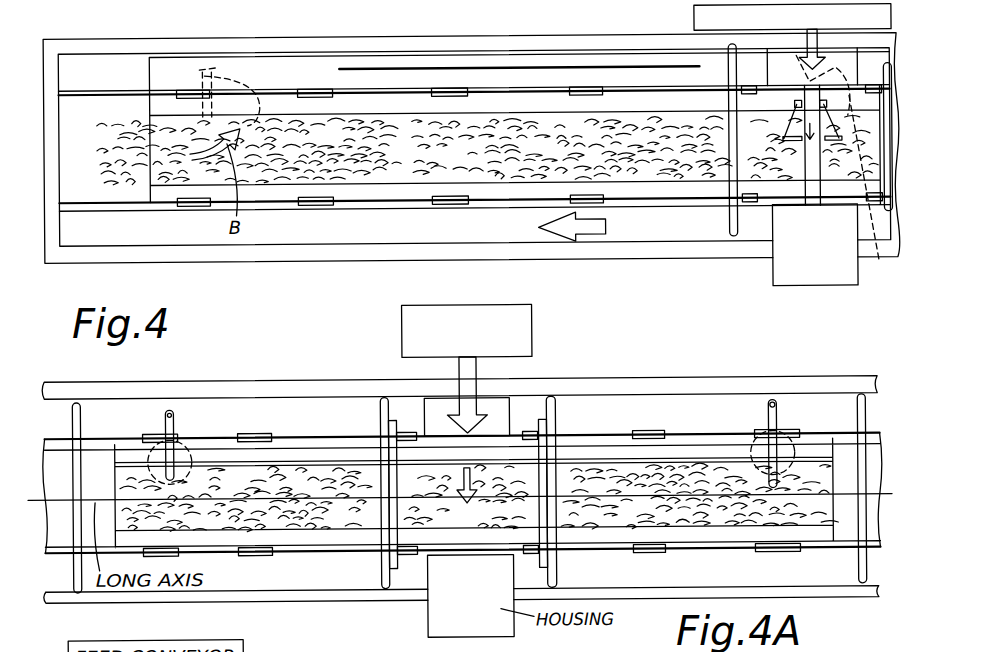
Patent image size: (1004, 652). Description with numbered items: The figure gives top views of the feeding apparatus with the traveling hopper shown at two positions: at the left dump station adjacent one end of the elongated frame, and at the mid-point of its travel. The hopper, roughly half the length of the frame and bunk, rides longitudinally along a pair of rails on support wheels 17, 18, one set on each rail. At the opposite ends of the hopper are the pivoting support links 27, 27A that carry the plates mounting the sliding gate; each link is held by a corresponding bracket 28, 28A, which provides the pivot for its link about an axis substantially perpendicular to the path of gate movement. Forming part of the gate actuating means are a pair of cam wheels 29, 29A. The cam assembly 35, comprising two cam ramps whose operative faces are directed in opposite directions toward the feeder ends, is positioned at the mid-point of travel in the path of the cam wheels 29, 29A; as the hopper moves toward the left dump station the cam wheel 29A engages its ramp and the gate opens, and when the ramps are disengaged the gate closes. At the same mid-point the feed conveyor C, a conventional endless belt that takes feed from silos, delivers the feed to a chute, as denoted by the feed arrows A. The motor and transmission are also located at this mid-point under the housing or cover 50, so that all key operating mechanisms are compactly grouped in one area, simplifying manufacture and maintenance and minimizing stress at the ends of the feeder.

In FIG. 4, the support wheels 17 is at (586, 88).
In FIG. 4A, the support wheels 17 is at (645, 432).
In FIG. 4, the support wheels 18 is at (440, 206).
In FIG. 4A, the support wheels 18 is at (765, 551).
In FIG. 4, the pivoting support link 27 is at (222, 79).
In FIG. 4, the bracket 28 is at (204, 78).
In FIG. 4, the cam wheel 29 is at (203, 108).
In FIG. 4A, the cam wheel 29 is at (180, 446).
In FIG. 4, the pivoting support link 27A is at (800, 63).
In FIG. 4, the bracket 28A is at (790, 96).
In FIG. 4, the cam wheel 29A is at (876, 189).
In FIG. 4A, the cam wheel 29A is at (754, 430).
In FIG. 4A, the cam assembly 35 is at (408, 408).
In FIG. 4, the housing or cover 50 is at (793, 263).
In FIG. 4A, the housing or cover 50 is at (437, 612).
In FIG. 4A, the feed arrows A is at (473, 483).
In FIG. 4, the feed conveyor C is at (694, 18).
In FIG. 4A, the feed conveyor C is at (527, 328).